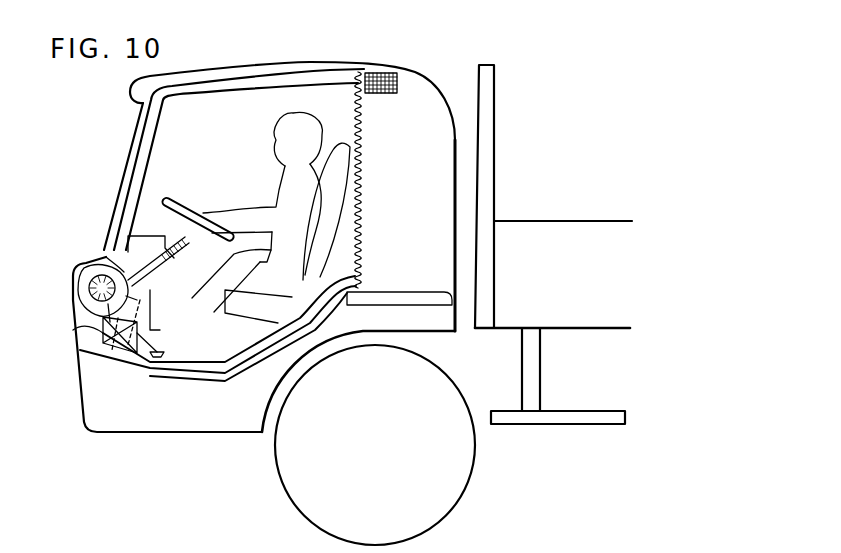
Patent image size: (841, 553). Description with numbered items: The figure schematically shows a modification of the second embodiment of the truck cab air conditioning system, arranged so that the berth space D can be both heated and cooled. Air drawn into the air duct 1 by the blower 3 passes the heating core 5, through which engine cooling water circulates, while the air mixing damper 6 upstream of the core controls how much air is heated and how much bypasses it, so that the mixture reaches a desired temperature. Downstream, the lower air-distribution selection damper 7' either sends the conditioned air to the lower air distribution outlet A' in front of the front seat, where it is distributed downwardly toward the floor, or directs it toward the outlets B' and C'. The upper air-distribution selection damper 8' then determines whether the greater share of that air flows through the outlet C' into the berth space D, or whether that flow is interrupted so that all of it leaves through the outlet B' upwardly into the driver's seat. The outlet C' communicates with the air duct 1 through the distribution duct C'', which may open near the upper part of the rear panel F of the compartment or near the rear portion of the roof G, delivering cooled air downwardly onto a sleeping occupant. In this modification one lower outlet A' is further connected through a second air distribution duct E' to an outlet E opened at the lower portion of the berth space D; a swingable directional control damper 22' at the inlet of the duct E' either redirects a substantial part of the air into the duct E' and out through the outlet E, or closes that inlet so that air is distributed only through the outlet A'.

The air duct 1 is at (110, 265).
The blower 3 is at (84, 268).
The heating core 5 is at (93, 327).
The air mixing damper 6 is at (112, 303).
The lower air-distribution selection damper 7' is at (151, 250).
The upper air-distribution selection damper 8' is at (162, 321).
The directional control damper 22' is at (114, 357).
The lower air distribution outlet A' is at (169, 342).
The air distribution outlet B' is at (181, 241).
The air distribution outlet C' is at (382, 99).
The distribution duct C'' is at (242, 166).
The berth space D is at (410, 246).
The air distribution outlet E is at (241, 315).
The second air distribution duct E' is at (218, 349).
The rear panel F is at (446, 104).
The roof G is at (256, 64).